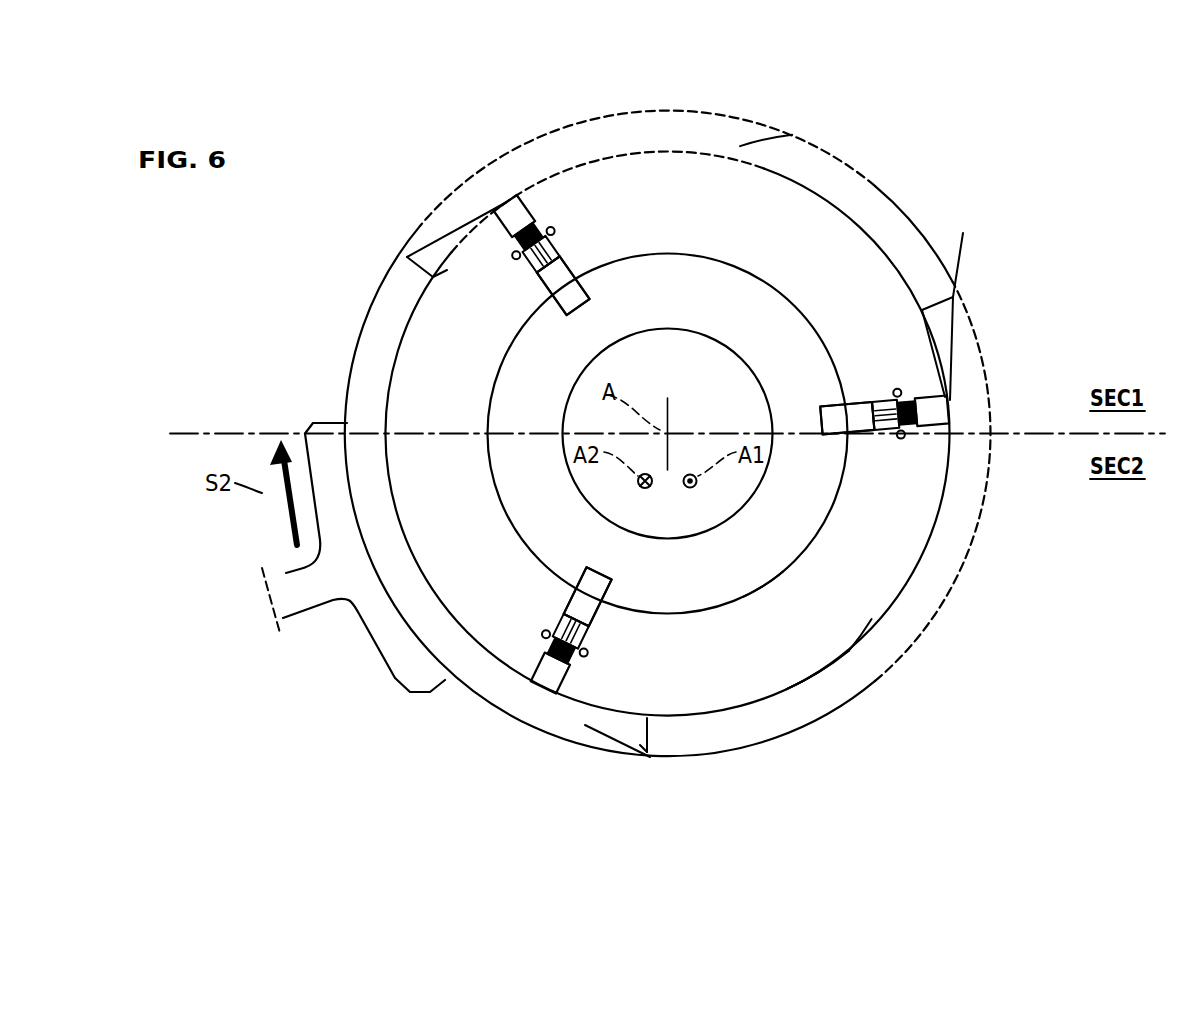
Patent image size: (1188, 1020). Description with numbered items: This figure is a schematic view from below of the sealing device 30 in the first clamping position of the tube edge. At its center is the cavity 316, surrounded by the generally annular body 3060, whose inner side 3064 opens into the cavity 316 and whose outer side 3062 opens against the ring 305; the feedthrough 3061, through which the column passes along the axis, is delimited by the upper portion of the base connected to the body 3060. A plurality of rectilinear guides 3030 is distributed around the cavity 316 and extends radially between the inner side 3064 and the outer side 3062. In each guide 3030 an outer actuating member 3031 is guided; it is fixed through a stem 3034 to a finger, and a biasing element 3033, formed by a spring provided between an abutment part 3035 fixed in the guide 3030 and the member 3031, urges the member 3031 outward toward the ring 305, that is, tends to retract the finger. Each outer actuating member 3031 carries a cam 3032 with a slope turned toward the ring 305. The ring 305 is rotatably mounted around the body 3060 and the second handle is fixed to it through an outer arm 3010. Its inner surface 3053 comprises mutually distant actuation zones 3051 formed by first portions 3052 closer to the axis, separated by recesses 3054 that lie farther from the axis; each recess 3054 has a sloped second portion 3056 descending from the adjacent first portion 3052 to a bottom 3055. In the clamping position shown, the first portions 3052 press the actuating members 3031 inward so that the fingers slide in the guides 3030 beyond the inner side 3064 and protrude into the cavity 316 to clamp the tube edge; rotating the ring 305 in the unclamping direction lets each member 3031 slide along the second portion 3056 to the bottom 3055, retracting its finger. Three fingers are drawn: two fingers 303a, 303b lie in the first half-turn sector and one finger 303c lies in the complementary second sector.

The sealing device 30 is at (930, 98).
The ring 305 is at (755, 147).
The cavity 316 is at (765, 330).
The outer arm 3010 is at (300, 572).
The guide 3030 is at (590, 237).
The outer actuating member 3031 is at (534, 232).
The cam 3032 is at (517, 200).
The biasing element 3033 is at (554, 230).
The stem 3034 is at (555, 272).
The abutment part 3035 is at (560, 250).
The actuation zone 3051 is at (712, 151).
The first portion of the inner surface 3052 is at (763, 168).
The inner surface 3053 is at (810, 680).
The recess 3054 is at (440, 248).
The bottom 3055 is at (410, 248).
The second portion 3056 is at (450, 231).
The body 3060 is at (812, 628).
The feedthrough 3061 is at (693, 333).
The outer side 3062 is at (860, 640).
The inner side 3064 is at (763, 590).
The finger 303a is at (852, 405).
The finger 303b is at (563, 292).
The finger 303c is at (622, 607).